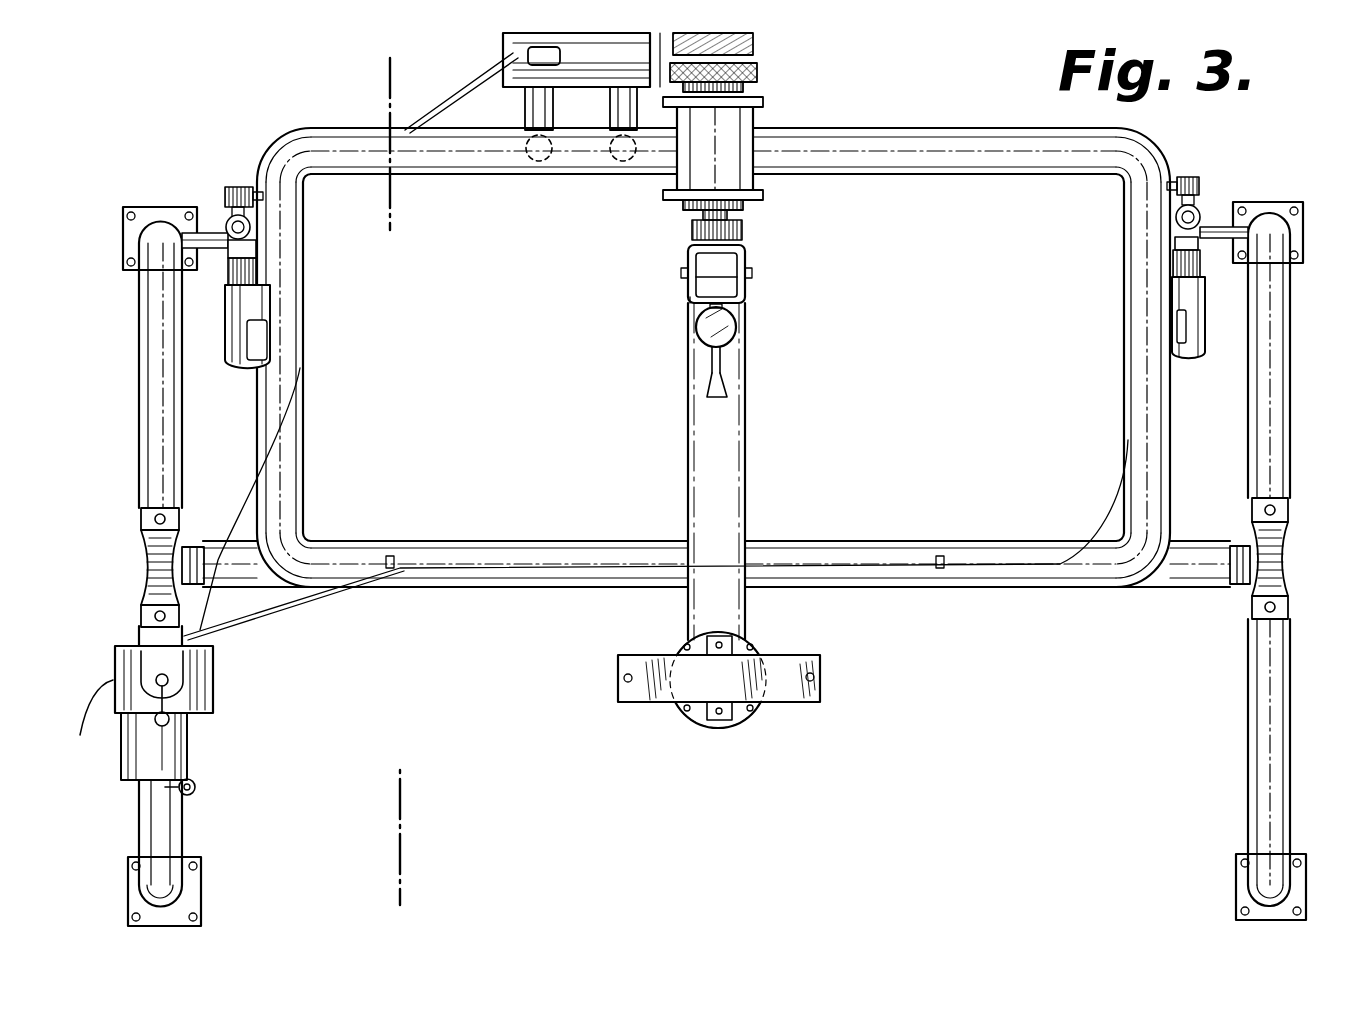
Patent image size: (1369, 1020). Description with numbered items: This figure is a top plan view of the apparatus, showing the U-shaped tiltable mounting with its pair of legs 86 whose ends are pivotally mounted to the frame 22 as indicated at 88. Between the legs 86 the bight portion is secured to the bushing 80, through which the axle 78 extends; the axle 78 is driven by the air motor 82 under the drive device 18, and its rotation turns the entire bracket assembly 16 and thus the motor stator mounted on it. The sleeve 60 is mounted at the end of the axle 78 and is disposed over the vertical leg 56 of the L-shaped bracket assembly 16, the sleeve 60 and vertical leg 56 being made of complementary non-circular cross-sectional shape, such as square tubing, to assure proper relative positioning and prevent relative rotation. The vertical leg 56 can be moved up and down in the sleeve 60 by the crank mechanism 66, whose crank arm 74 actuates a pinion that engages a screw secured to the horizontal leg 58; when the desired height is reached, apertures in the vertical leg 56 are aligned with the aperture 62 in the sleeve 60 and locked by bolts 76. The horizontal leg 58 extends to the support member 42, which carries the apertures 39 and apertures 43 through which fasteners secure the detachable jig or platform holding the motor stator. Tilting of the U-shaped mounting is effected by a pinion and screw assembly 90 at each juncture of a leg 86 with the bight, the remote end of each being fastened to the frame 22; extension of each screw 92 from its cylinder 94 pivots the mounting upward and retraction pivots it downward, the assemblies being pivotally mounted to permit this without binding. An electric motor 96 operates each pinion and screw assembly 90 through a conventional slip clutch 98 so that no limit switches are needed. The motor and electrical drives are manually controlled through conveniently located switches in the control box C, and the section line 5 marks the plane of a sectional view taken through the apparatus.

The section line 5- 5 is at (472, 42).
The bracket assembly 16 is at (750, 410).
The drive device 18 is at (786, 84).
The frame 22 is at (155, 399).
The apertures 39 is at (716, 643).
The second support member 42 is at (792, 685).
The apertures 43 is at (628, 682).
The vertical leg 56 is at (740, 288).
The horizontal leg 58 is at (732, 490).
The sleeve 60 is at (748, 250).
The aperture 62 is at (690, 296).
The crank mechanism 66 is at (699, 339).
The crank arm 74 is at (722, 352).
The bolts 76 is at (687, 270).
The axle 78 is at (705, 214).
The bushing 80 is at (735, 176).
The air motor 82 is at (520, 45).
The legs 86 is at (1031, 150).
The pivotal mounting 88 is at (160, 557).
The pinion and screw assembly 90 is at (214, 226).
The screw 92 is at (216, 226).
The cylinder 94 is at (240, 248).
The electric motor 96 is at (234, 342).
The slip clutch 98 is at (224, 208).
The control box C is at (200, 729).